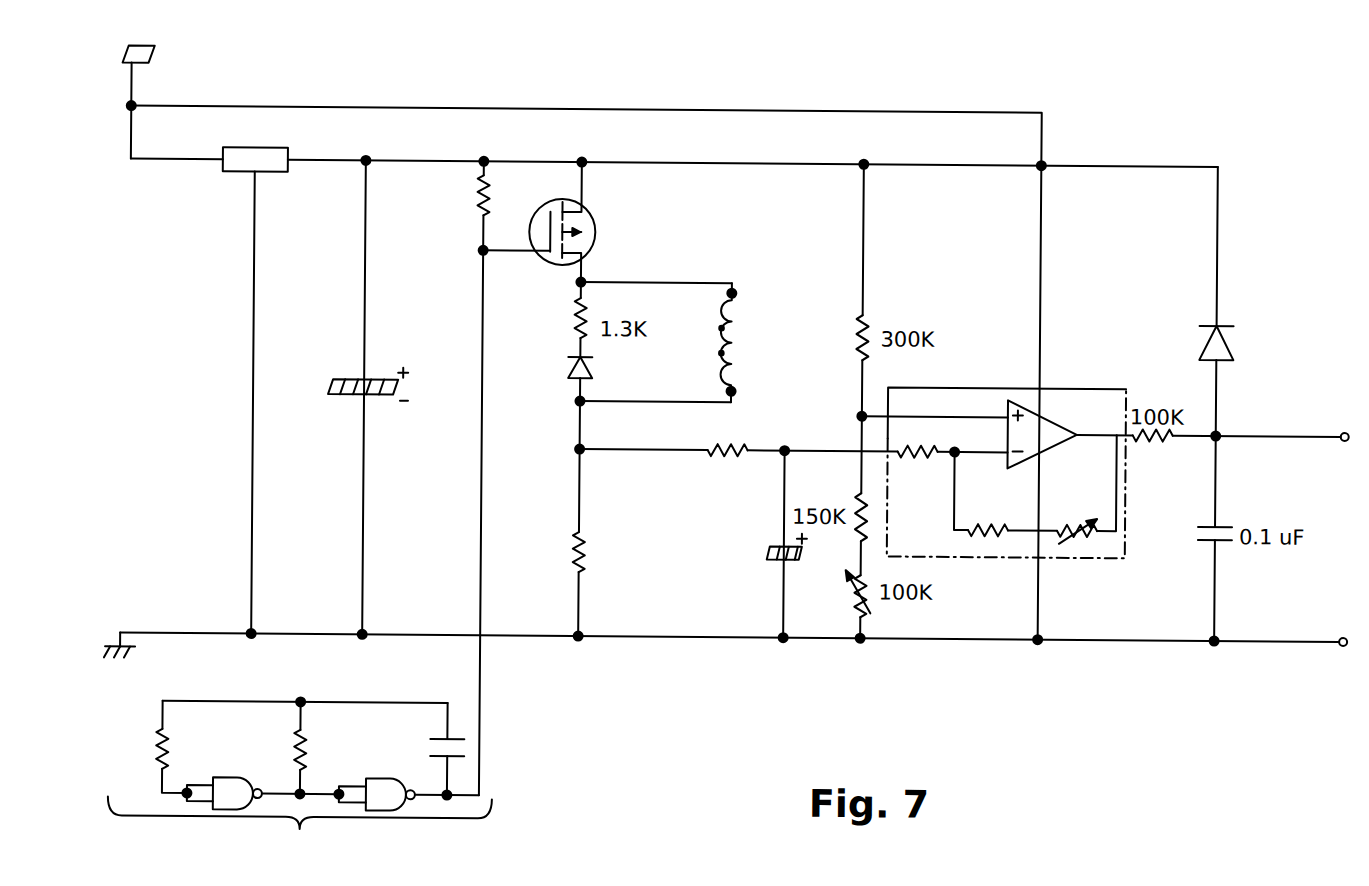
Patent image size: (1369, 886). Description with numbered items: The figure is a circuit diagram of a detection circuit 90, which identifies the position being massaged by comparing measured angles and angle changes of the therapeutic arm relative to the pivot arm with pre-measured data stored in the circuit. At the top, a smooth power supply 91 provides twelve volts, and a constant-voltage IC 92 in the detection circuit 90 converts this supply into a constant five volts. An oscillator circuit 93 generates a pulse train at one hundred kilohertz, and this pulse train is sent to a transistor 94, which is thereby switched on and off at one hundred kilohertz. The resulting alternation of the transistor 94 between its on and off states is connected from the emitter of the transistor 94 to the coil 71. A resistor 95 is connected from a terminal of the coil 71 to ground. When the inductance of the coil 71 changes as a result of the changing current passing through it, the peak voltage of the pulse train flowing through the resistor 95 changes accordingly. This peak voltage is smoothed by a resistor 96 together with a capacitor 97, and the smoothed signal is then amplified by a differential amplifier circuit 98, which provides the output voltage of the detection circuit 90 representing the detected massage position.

The detection circuit 90 is at (1201, 128).
The smooth power supply 91 is at (150, 53).
The constant-voltage IC 92 is at (280, 175).
The oscillator circuit 93 is at (331, 762).
The transistor 94 is at (596, 213).
The resistor 95 is at (586, 546).
The resistor 96 is at (741, 456).
The capacitor 97 is at (774, 562).
The differential amplifier circuit 98 is at (1080, 386).
The coil 71 is at (734, 296).